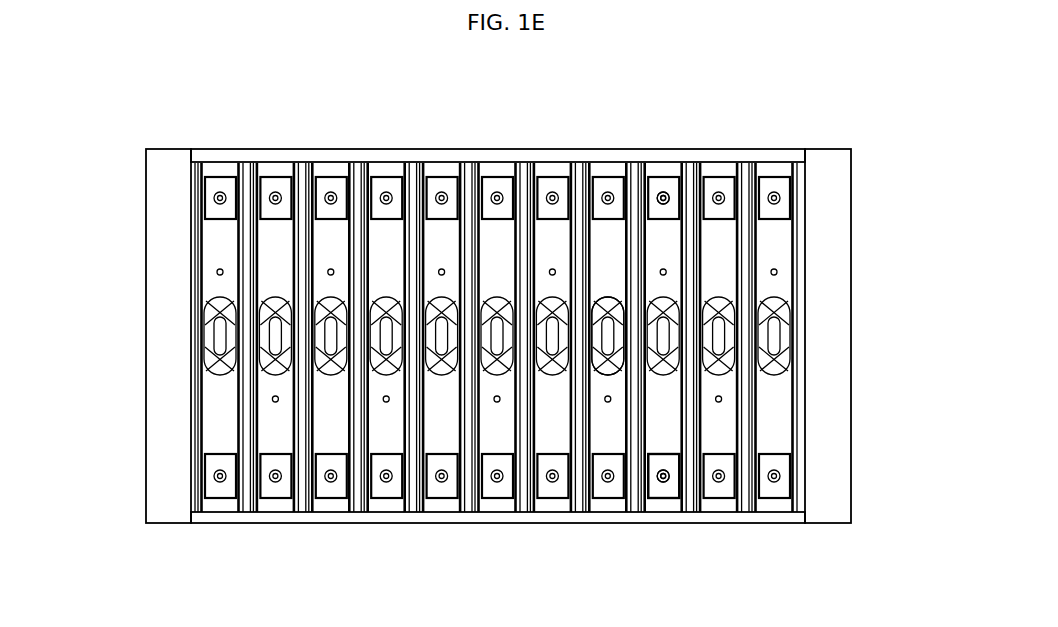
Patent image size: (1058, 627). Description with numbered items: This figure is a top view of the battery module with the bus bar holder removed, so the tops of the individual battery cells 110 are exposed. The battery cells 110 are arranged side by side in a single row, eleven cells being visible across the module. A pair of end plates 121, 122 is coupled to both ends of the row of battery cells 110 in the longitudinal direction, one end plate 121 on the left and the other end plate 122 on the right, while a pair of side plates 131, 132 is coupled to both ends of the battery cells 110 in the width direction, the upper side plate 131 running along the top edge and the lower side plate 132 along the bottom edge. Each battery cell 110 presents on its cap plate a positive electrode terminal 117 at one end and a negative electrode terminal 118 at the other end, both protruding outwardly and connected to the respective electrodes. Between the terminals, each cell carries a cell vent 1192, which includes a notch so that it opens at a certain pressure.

The battery cell 110 is at (724, 232).
The positive electrode terminal 117 is at (660, 196).
The negative electrode terminal 118 is at (662, 500).
The cell vent 1192 is at (592, 320).
The end plate 121 is at (158, 316).
The end plate 122 is at (838, 316).
The side plate 131 is at (361, 149).
The side plate 132 is at (472, 527).